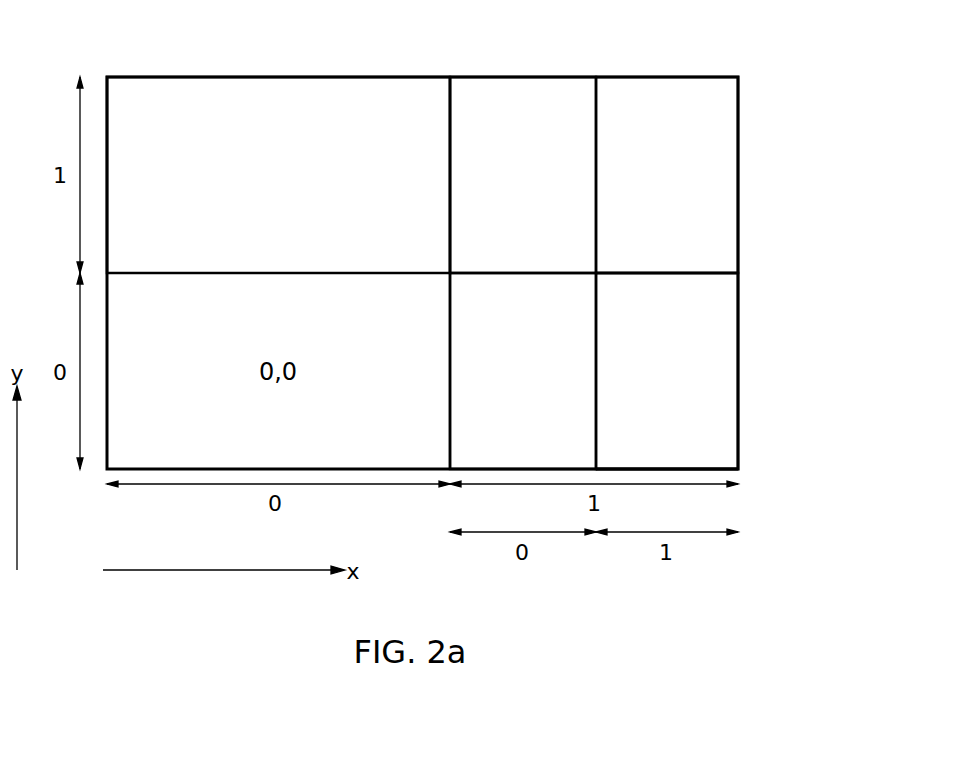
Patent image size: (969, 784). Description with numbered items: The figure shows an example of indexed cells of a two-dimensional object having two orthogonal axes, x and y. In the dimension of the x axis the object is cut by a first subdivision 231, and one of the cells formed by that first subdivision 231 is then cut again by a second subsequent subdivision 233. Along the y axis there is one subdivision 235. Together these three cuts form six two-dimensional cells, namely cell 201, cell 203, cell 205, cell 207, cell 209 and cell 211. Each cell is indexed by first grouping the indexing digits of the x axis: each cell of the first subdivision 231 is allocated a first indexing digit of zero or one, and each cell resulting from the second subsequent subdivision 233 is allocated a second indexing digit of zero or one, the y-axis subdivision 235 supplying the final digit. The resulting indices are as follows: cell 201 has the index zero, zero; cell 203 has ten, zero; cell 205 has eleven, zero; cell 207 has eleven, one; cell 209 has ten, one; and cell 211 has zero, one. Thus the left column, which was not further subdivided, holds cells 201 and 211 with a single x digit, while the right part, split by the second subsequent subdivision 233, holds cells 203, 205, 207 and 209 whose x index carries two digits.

The cell 201 is at (136, 461).
The cell 211 is at (200, 98).
The cell 209 is at (528, 100).
The cell 207 is at (682, 100).
The cell 203 is at (575, 327).
The cell 205 is at (723, 400).
The first subdivision 231 is at (450, 112).
The subdivision of the dimension along the y-axis 235 is at (705, 273).
The second subsequent subdivision 233 is at (596, 443).